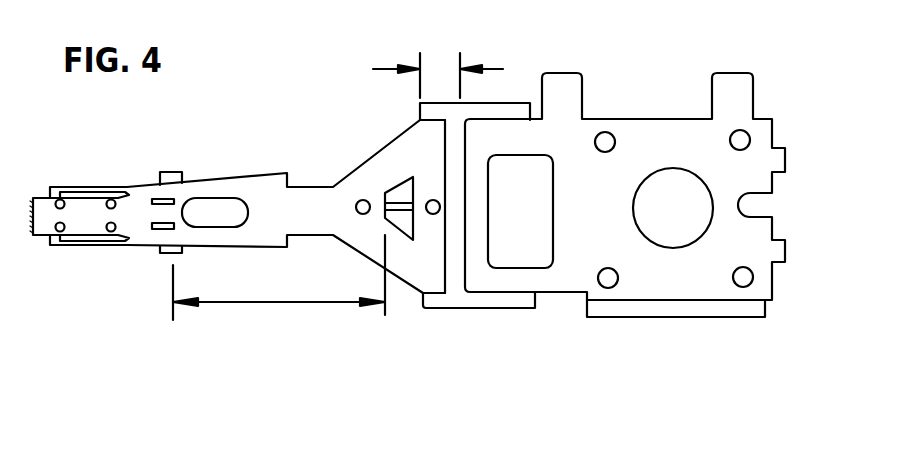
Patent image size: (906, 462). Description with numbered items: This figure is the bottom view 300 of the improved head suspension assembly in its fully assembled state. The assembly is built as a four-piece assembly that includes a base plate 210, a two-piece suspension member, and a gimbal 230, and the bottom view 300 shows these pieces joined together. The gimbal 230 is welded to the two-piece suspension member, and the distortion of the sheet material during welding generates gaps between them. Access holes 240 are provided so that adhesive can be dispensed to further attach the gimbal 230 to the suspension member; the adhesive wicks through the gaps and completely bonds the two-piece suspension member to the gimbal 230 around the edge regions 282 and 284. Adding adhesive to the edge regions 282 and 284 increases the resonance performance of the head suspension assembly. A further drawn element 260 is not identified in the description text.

The base plate 210 is at (650, 118).
The gimbal 230 is at (181, 159).
The access holes 240 is at (433, 199).
The wedge member 260 is at (398, 215).
The edge region 282 is at (440, 67).
The edge region 284 is at (273, 303).
The bottom view 300 is at (514, 341).